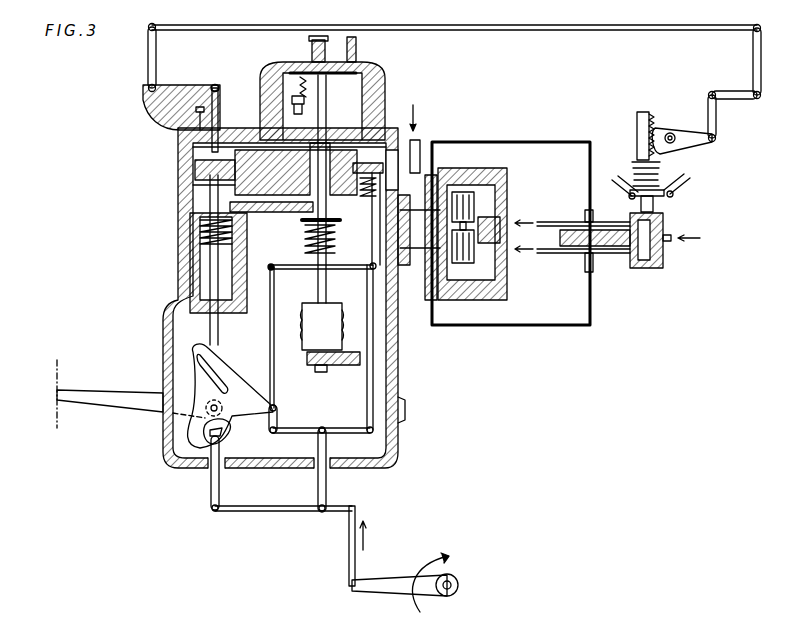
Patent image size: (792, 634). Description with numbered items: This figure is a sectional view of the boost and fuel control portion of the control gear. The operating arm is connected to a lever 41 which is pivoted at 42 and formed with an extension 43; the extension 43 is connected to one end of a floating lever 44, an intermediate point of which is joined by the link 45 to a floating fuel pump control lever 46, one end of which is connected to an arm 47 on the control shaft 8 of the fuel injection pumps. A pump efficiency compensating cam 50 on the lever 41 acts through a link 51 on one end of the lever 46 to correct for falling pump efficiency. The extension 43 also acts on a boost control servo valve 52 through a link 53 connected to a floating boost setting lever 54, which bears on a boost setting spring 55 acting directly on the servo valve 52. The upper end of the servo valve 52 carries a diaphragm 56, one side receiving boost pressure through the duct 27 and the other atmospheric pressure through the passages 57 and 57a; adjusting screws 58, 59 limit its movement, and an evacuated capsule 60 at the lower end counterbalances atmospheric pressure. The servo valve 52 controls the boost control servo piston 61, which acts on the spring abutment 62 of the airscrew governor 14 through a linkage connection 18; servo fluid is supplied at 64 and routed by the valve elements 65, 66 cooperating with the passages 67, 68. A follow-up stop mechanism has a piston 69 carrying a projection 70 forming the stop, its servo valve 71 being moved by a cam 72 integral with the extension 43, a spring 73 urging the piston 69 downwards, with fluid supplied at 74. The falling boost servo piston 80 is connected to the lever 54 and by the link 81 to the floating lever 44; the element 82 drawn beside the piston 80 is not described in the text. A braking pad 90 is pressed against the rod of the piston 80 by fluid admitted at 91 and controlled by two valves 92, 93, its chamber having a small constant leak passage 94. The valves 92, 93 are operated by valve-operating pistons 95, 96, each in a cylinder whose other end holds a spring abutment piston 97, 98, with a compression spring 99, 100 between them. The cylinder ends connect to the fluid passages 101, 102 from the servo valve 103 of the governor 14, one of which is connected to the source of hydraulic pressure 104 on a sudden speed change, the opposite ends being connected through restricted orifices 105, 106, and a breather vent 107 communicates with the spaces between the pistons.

The control shaft 8 is at (453, 580).
The governor 14 is at (684, 190).
The linkage connection 18 is at (456, 25).
The duct 27 is at (356, 45).
The lever 41 is at (93, 395).
The pivot 42 is at (201, 428).
The extension 43 is at (240, 403).
The floating lever 44 is at (298, 428).
The link 45 is at (318, 487).
The floating fuel pump control lever 46 is at (270, 511).
The arm 47 is at (398, 580).
The pump efficiency compensating cam 50 is at (230, 434).
The link 51 is at (211, 494).
The boost control servo valve 52 is at (327, 112).
The link 53 is at (270, 292).
The floating boost setting lever 54 is at (322, 262).
The boost setting spring 55 is at (316, 262).
The diaphragm 56 is at (323, 86).
The passage 57 is at (182, 193).
The passage 57a is at (406, 410).
The adjusting screw 58 is at (318, 44).
The adjusting screw 59 is at (293, 112).
The evacuated capsule 60 is at (333, 351).
The boost control servo piston 61 is at (287, 182).
The spring abutment 62 is at (660, 170).
The hydraulic servo fluid supply 64 is at (275, 165).
The valve element 65 is at (409, 109).
The valve element 66 is at (313, 212).
The passage 67 is at (268, 140).
The passage 68 is at (271, 193).
The piston 69 is at (195, 255).
The projection 70 is at (200, 207).
The servo valve 71 is at (220, 341).
The cam 72 is at (213, 383).
The spring 73 is at (200, 232).
The hydraulic servo fluid supply 74 is at (197, 285).
The servo piston 80 is at (378, 150).
The link 81 is at (367, 398).
The spring 82 is at (356, 228).
The braking pad 90 is at (376, 270).
The hydraulic fluid admission 91 is at (420, 158).
The valve 92 is at (362, 230).
The valve 93 is at (428, 275).
The constant leak passage 94 is at (349, 318).
The valve-operating piston 95 is at (511, 233).
The valve-operating piston 96 is at (452, 282).
The spring abutment piston 97 is at (492, 188).
The spring abutment piston 98 is at (500, 262).
The compression spring 99 is at (472, 222).
The compression spring 100 is at (468, 282).
The fluid passage 101 is at (562, 288).
The fluid passage 102 is at (500, 248).
The servo valve 103 is at (665, 260).
The source of hydraulic pressure 104 is at (672, 236).
The restricted orifice 105 is at (456, 175).
The restricted orifice 106 is at (508, 256).
The breather vent 107 is at (449, 318).